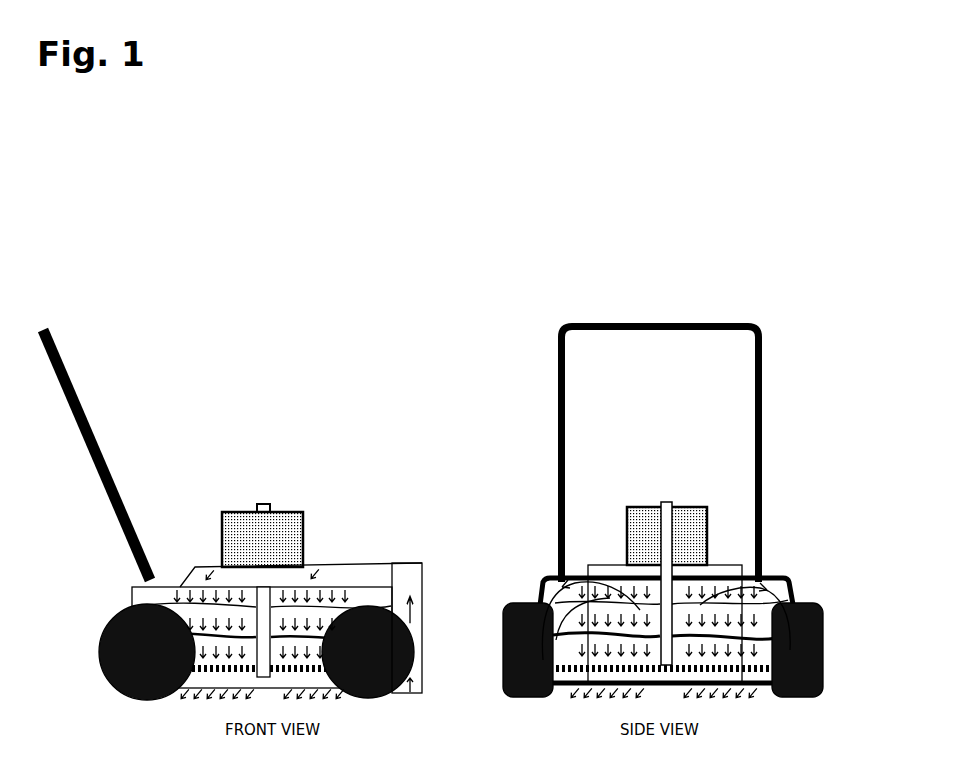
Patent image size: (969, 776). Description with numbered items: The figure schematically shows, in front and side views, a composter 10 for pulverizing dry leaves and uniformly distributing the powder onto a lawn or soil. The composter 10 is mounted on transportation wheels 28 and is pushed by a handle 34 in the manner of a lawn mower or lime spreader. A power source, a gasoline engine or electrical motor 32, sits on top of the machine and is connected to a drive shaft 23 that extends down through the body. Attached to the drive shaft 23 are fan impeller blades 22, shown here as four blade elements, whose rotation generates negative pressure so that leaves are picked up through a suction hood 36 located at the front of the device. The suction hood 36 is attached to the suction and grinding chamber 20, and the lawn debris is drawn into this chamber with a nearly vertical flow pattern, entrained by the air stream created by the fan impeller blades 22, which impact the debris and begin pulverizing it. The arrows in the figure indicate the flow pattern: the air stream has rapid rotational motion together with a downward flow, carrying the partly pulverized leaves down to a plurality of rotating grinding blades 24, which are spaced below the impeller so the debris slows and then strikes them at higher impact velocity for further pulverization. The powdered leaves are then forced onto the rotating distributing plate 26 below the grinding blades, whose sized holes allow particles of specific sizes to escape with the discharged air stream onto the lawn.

The composter 10 is at (578, 290).
The suction and grinding chamber 20 is at (640, 655).
The fan impeller blades 22 is at (625, 605).
The drive shaft 23 is at (661, 503).
The rotating grinding blades 24 is at (312, 640).
The rotating distributing plate 26 is at (512, 637).
The transportation wheels 28 is at (518, 648).
The electrical motor 32 is at (627, 507).
The handle 34 is at (70, 375).
The suction hood 36 is at (503, 667).